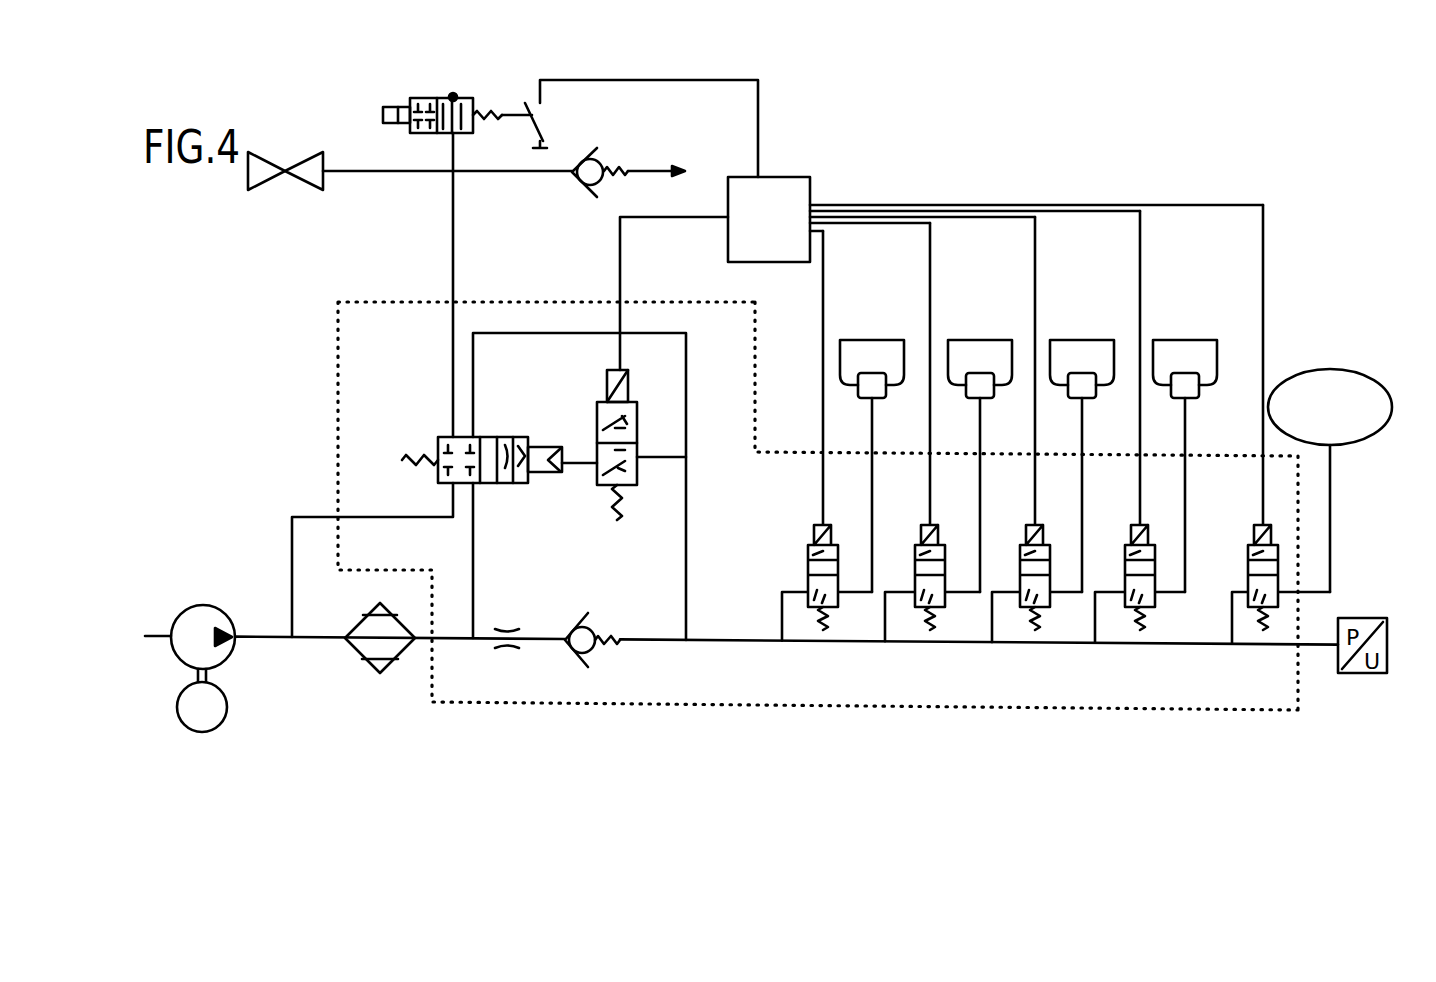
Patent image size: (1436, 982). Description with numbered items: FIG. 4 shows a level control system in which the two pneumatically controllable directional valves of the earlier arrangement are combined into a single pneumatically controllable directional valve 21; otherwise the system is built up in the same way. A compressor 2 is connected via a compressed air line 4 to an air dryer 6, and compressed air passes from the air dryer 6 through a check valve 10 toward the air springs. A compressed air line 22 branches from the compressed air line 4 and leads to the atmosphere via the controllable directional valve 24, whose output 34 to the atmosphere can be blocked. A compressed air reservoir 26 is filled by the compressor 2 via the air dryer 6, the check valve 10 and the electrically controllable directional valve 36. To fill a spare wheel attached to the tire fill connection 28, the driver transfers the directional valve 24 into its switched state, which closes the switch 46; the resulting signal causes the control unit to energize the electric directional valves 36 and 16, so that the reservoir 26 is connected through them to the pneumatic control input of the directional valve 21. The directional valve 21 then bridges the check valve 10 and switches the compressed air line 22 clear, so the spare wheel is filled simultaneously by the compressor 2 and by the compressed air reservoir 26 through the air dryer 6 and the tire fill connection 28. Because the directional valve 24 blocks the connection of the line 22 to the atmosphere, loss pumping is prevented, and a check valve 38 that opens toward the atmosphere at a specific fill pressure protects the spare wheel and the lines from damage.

The compressor 2 is at (190, 604).
The compressed air line 4 is at (323, 640).
The air dryer 6 is at (405, 655).
The check valve 10 is at (605, 643).
The electrically controllable directional valve 16 is at (637, 432).
The pneumatically controllable directional valve 21 is at (505, 436).
The compressed air line 22 is at (291, 571).
The controllable directional valve 24 is at (417, 97).
The compressed air reservoir 26 is at (1345, 370).
The tire fill connection 28 is at (257, 193).
The output 34 is at (456, 95).
The electrically controllable directional valve 36 is at (1252, 615).
The check valve 38 is at (627, 160).
The switch 46 is at (532, 105).